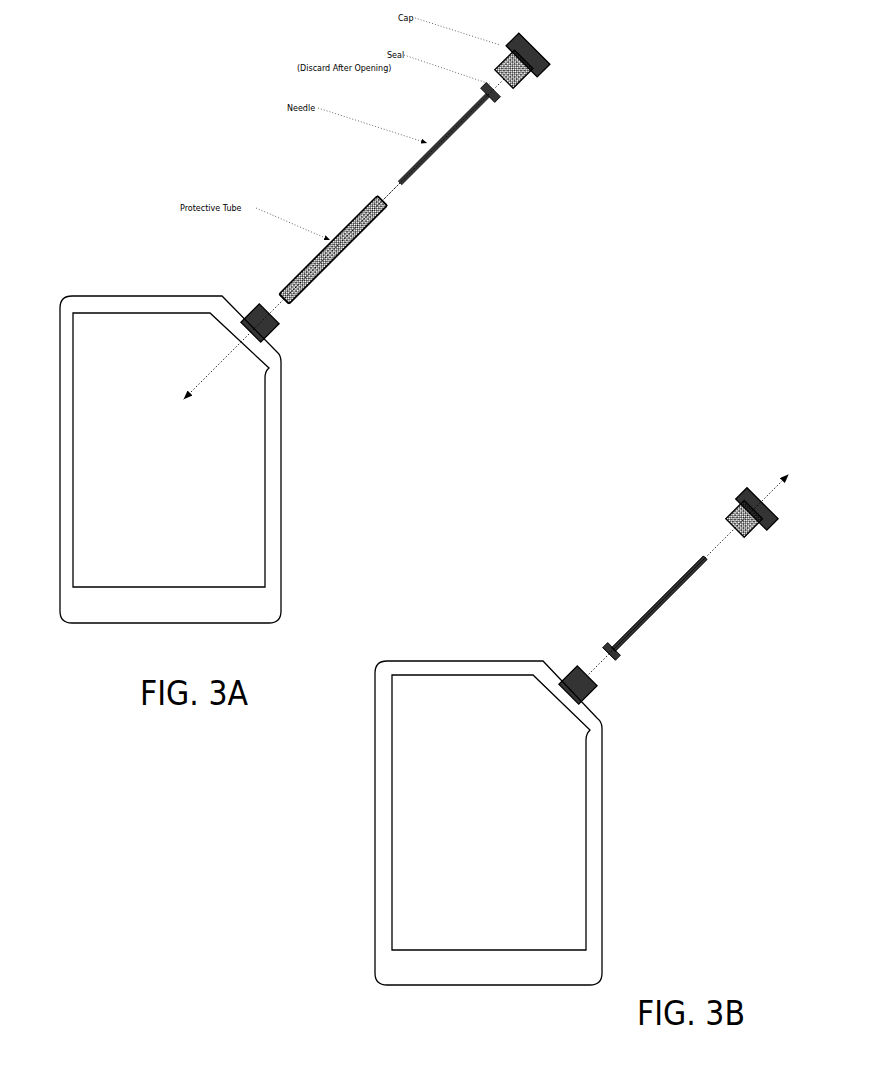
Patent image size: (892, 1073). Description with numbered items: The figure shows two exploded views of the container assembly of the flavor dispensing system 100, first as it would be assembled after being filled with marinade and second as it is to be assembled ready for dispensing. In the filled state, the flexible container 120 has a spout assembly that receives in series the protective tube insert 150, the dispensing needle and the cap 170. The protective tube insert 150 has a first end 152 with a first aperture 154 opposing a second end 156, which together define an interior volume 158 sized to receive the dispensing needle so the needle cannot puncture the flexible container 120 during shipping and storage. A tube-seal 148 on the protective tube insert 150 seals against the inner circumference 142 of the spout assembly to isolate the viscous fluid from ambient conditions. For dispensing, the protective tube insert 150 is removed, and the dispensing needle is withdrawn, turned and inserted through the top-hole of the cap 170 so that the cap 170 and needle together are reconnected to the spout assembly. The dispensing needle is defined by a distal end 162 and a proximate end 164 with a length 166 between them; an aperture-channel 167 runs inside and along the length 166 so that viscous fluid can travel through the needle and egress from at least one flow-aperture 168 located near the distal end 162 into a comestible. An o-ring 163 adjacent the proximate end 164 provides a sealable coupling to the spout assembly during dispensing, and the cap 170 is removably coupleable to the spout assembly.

In FIG. 3A, the flavor dispensing system 100 is at (635, 72).
In FIG. 3A, the flexible container 120 is at (177, 510).
In FIG. 3B, the flexible container 120 is at (485, 790).
In FIG. 3A, the inner circumference 142 is at (268, 302).
In FIG. 3A, the tube-seal 148 is at (366, 197).
In FIG. 3A, the protective tube insert 150 is at (365, 230).
In FIG. 3A, the first end 152 is at (388, 206).
In FIG. 3A, the first aperture 154 is at (373, 190).
In FIG. 3A, the second end 156 is at (293, 303).
In FIG. 3A, the interior volume 158 is at (323, 268).
In FIG. 3B, the distal end 162 is at (705, 550).
In FIG. 3B, the o-ring 163 is at (607, 643).
In FIG. 3B, the proximate end 164 is at (628, 645).
In FIG. 3B, the length 166 is at (652, 602).
In FIG. 3B, the aperture-channel 167 is at (672, 590).
In FIG. 3B, the flow-aperture 168 is at (703, 568).
In FIG. 3B, the cap 170 is at (735, 485).